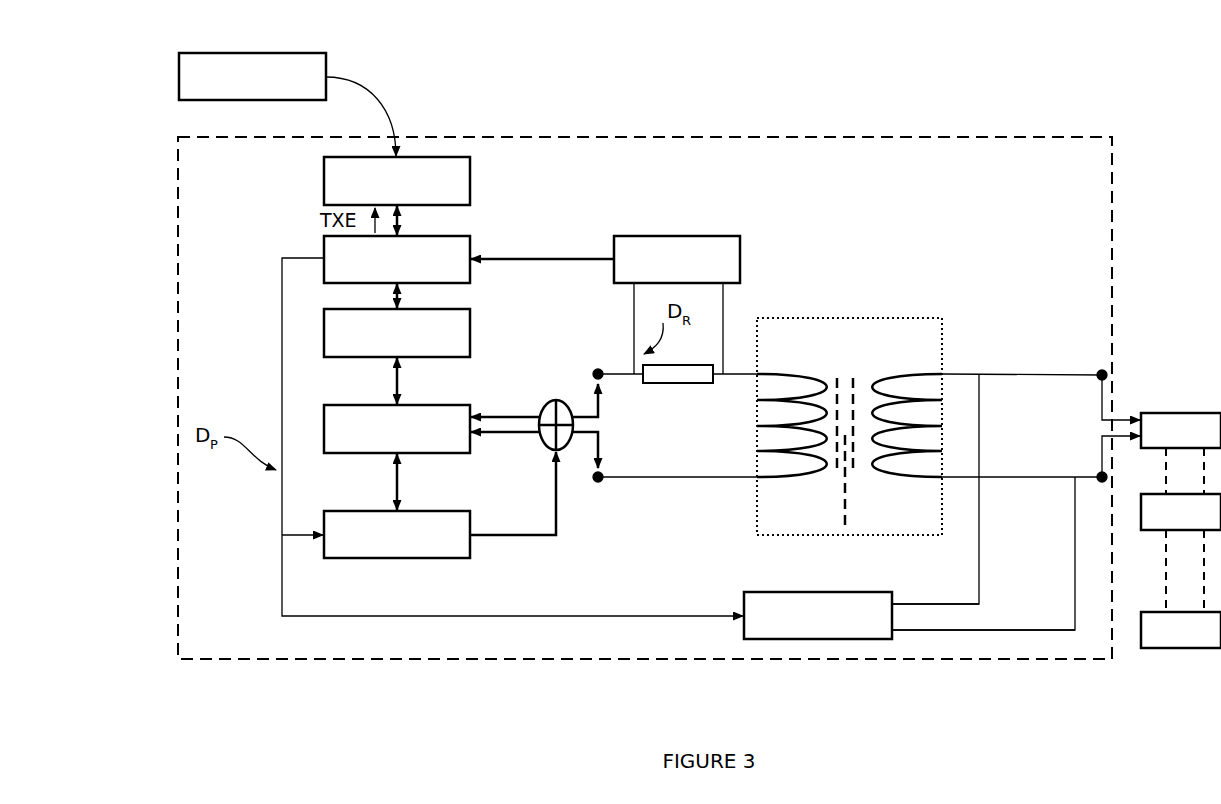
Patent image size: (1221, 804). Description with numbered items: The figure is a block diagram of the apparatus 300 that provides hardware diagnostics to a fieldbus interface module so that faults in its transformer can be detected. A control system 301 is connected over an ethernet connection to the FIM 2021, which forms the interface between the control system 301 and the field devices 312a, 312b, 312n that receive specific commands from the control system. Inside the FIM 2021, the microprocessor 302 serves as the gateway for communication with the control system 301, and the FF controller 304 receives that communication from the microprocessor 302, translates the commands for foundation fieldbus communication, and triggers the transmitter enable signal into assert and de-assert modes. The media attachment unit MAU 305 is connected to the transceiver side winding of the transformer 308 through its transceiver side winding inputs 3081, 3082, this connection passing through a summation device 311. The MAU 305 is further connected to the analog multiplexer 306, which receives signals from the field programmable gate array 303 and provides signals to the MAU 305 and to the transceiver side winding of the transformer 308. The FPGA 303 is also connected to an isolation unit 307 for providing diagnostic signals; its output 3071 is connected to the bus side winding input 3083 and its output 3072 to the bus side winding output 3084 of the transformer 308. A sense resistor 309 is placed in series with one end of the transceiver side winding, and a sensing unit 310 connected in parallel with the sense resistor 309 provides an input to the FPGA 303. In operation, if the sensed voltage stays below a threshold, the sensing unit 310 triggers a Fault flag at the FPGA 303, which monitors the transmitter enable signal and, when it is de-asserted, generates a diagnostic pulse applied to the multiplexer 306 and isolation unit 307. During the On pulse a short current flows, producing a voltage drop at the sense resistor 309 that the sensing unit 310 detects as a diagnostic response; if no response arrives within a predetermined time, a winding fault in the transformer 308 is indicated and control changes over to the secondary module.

The apparatus 300 is at (626, 80).
The control system 301 is at (252, 76).
The microprocessor 302 is at (397, 181).
The field programmable gate array 303 is at (397, 259).
The FF controller 304 is at (397, 333).
The media attachment unit 305 is at (397, 429).
The analog multiplexer 306 is at (397, 534).
The isolation unit 307 is at (818, 615).
The transformer 308 is at (849, 426).
The sense resistor 309 is at (678, 374).
The sensing unit 310 is at (677, 259).
The summation device 311 is at (528, 401).
The field device 312a is at (1181, 430).
The field device 312b is at (1181, 512).
The field devices 312n is at (1181, 630).
The FIM 2021 is at (1018, 132).
The output of the isolation unit 3071 is at (903, 604).
The output of the isolation unit 3072 is at (908, 636).
The transceiver side winding input 3081 is at (582, 373).
The transceiver side winding input 3082 is at (599, 492).
The bus side winding input 3083 is at (1098, 367).
The bus side winding output 3084 is at (1098, 468).